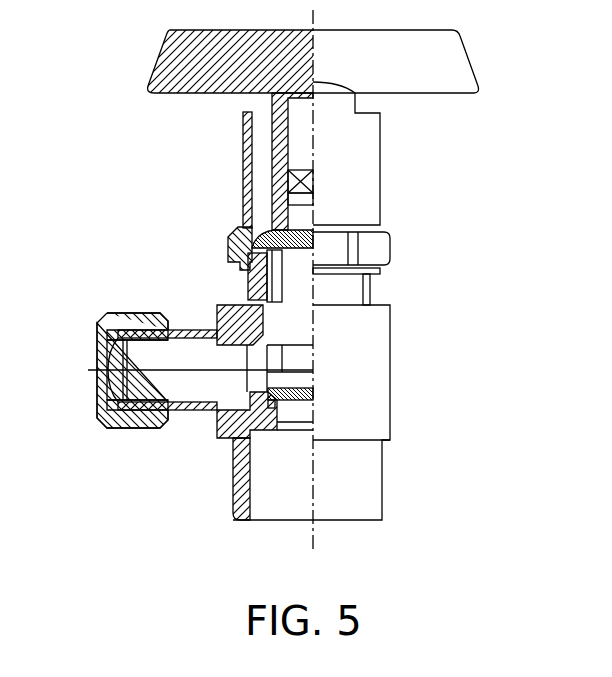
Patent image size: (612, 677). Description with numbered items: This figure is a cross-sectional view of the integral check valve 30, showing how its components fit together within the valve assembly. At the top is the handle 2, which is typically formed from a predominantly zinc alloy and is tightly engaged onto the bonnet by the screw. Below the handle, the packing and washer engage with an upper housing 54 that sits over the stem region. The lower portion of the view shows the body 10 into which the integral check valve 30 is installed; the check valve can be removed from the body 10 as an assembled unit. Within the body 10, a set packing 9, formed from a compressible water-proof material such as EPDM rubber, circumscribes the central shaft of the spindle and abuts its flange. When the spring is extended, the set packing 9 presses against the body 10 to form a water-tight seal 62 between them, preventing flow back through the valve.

The handle 2 is at (160, 56).
The upper housing 54 is at (248, 230).
The integral check valve 30 is at (282, 320).
The set packing 9 is at (313, 392).
The body 10 is at (357, 478).
The water-tight seal 62 is at (263, 393).